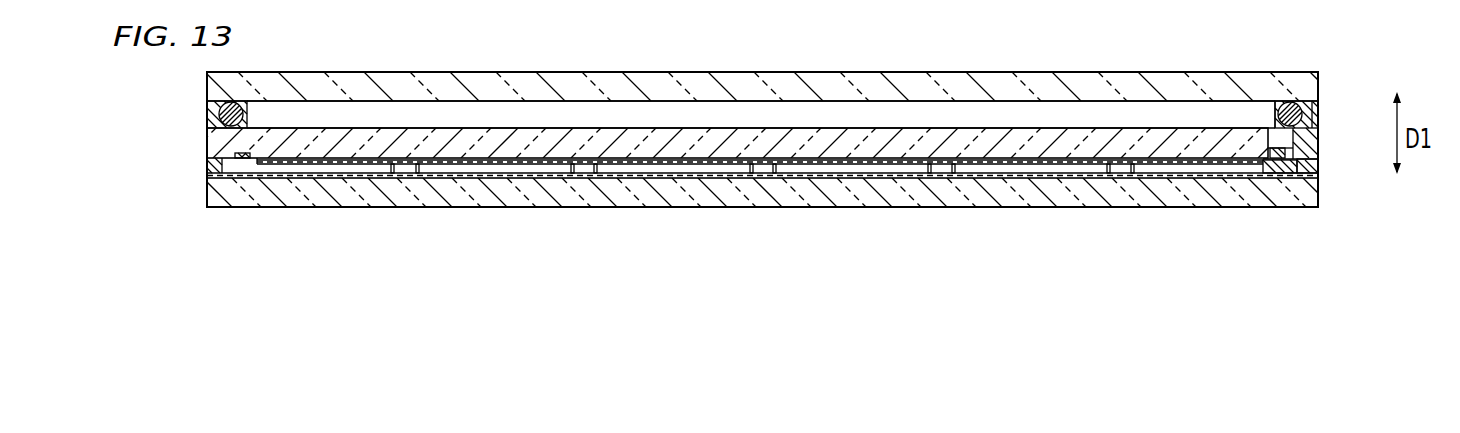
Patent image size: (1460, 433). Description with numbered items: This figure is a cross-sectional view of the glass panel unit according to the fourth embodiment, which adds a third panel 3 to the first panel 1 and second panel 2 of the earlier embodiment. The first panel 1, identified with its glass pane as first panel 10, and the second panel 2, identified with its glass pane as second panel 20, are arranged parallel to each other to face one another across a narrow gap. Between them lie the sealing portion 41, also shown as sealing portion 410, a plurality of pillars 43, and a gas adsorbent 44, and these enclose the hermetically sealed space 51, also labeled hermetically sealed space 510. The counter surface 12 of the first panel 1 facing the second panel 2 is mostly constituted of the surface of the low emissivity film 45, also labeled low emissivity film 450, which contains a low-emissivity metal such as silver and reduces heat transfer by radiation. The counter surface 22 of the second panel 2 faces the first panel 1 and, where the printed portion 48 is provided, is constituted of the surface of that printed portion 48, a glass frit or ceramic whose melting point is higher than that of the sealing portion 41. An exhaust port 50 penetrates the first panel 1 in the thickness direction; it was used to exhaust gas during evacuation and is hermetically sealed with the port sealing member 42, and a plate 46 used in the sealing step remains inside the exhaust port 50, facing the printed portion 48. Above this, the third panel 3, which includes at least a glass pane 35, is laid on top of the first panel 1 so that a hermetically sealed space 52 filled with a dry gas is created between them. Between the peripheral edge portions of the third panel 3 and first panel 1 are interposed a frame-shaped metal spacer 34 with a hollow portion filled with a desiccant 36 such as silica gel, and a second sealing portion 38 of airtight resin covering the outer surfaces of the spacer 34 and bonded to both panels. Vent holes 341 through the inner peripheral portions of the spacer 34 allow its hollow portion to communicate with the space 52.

The first panel 1 is at (714, 142).
The first substrate main body 10 is at (233, 146).
The second panel 2 is at (782, 215).
The second substrate main body 20 is at (322, 187).
The third panel 3 is at (483, 80).
The glass pane 35 is at (571, 85).
The hermetically sealed space 52 is at (1028, 112).
The spacer 34 is at (1288, 103).
The vent holes 341 is at (1259, 81).
The desiccant 36 is at (1320, 103).
The second sealing portion 38 is at (1318, 119).
The exhaust port 50 is at (1285, 140).
The sealing portion 41 is at (1345, 191).
The spacer member portion 410 is at (1318, 168).
The port sealing member 42 is at (1288, 168).
The plate 46 is at (1278, 156).
The gas adsorbent 44 is at (243, 158).
The pillars 43 is at (401, 168).
The printed portion 48 is at (526, 170).
The counter surface 12 is at (660, 163).
The low emissivity film 45 is at (760, 206).
The functional layer portion 450 is at (887, 161).
The counter surface 22 is at (728, 173).
The hermetically sealed space 51 is at (762, 211).
The insulating layer portion 510 is at (1012, 172).